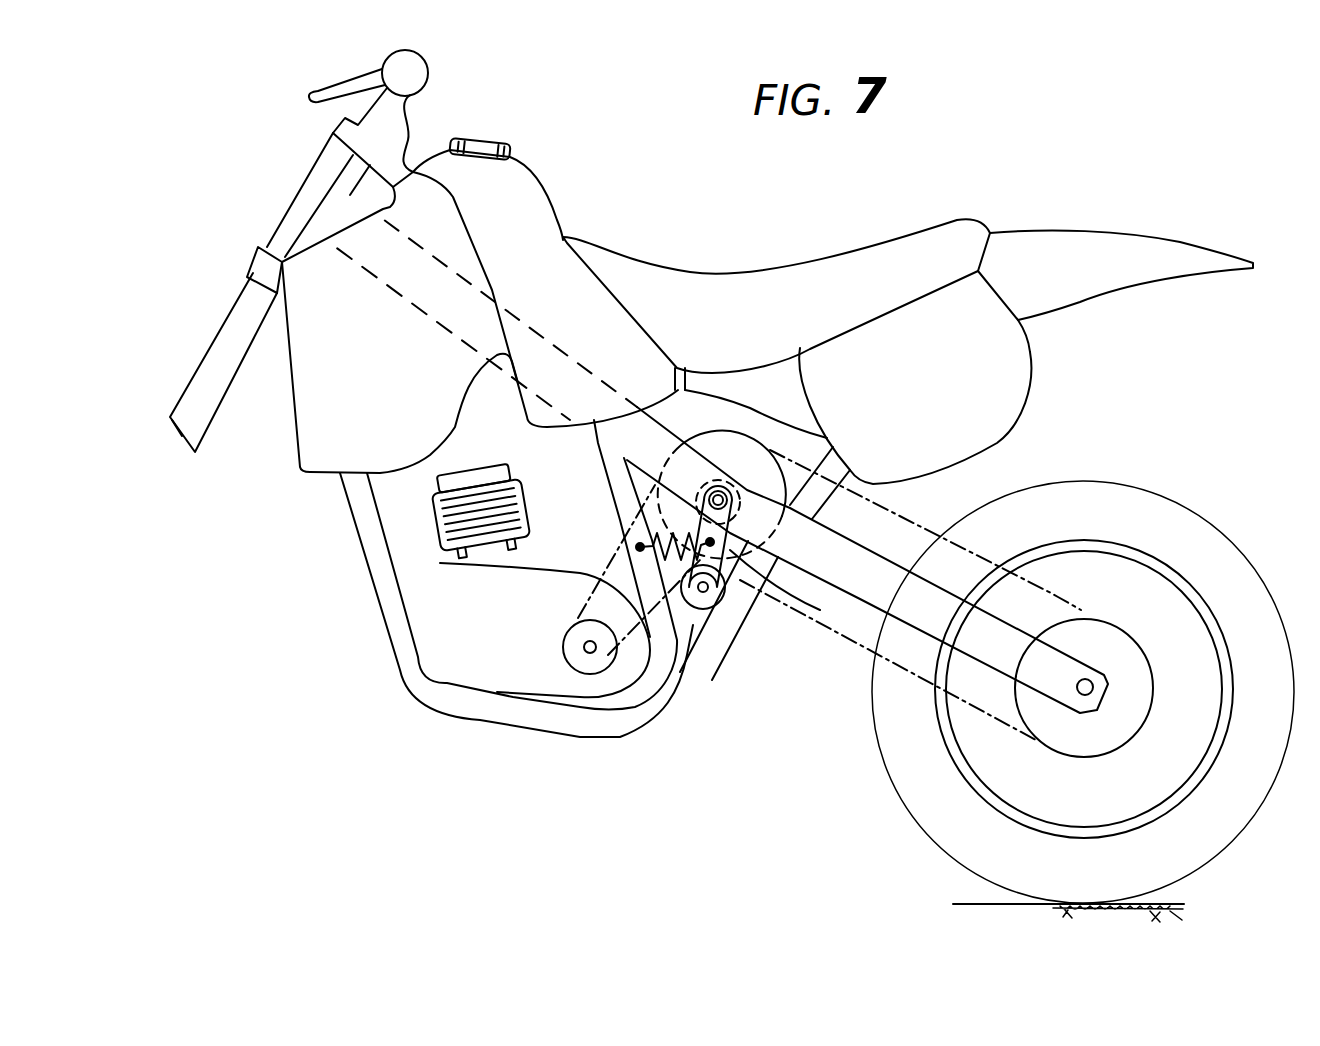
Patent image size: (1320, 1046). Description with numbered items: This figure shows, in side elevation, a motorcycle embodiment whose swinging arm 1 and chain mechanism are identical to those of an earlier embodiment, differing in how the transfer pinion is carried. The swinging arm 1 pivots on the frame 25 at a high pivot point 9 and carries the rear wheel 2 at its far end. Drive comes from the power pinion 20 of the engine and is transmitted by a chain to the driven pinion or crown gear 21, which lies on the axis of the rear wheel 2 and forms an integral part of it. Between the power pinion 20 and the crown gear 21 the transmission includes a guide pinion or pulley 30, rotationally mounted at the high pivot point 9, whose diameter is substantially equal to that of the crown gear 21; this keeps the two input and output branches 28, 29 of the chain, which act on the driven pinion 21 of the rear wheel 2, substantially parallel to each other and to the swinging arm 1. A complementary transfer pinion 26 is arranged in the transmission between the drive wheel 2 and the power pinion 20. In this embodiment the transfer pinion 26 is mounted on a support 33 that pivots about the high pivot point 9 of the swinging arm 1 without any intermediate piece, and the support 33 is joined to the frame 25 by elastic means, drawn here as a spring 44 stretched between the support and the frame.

The swinging arm 1 is at (938, 606).
The rear wheel 2 is at (967, 845).
The high pivot point 9 is at (722, 495).
The power pinion 20 is at (593, 662).
The driven pinion or crown gear 21 is at (1093, 734).
The frame 25 is at (372, 546).
The transfer pinion 26 is at (715, 600).
The input branch of the chain 28 is at (906, 669).
The output branch of the chain 29 is at (1051, 593).
The guide pinion or pulley 30 is at (731, 450).
The support 33 is at (720, 552).
The tension spring 44 is at (672, 532).